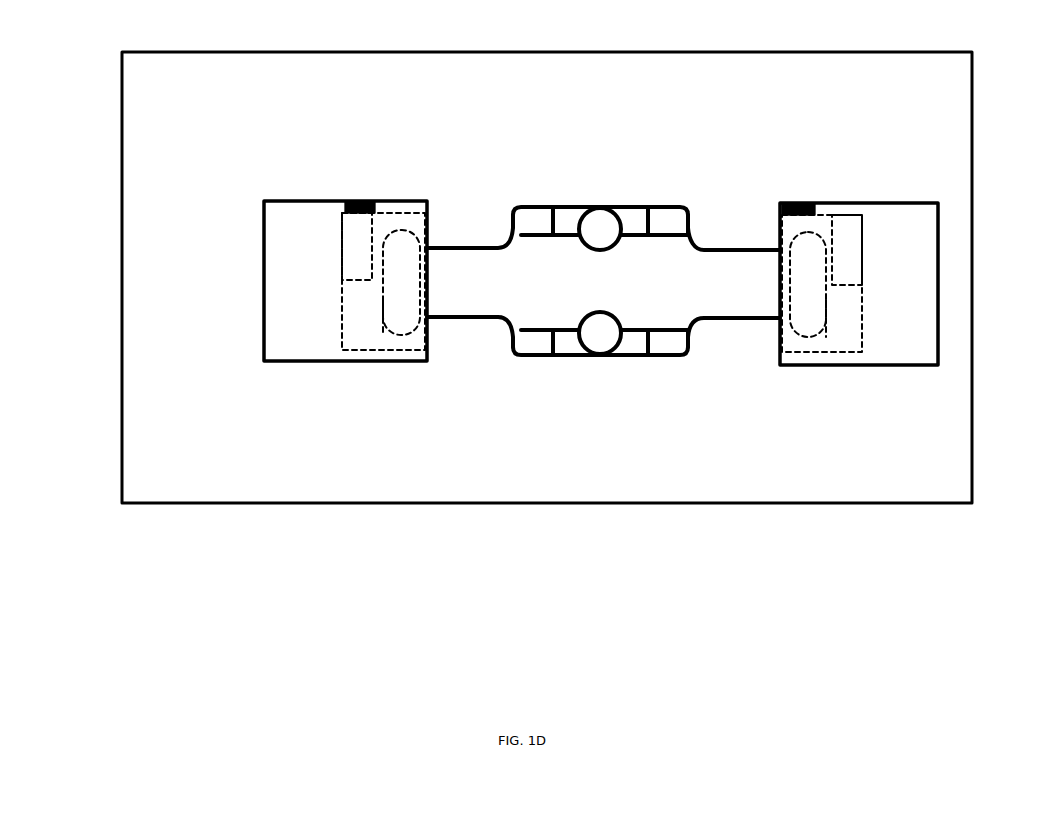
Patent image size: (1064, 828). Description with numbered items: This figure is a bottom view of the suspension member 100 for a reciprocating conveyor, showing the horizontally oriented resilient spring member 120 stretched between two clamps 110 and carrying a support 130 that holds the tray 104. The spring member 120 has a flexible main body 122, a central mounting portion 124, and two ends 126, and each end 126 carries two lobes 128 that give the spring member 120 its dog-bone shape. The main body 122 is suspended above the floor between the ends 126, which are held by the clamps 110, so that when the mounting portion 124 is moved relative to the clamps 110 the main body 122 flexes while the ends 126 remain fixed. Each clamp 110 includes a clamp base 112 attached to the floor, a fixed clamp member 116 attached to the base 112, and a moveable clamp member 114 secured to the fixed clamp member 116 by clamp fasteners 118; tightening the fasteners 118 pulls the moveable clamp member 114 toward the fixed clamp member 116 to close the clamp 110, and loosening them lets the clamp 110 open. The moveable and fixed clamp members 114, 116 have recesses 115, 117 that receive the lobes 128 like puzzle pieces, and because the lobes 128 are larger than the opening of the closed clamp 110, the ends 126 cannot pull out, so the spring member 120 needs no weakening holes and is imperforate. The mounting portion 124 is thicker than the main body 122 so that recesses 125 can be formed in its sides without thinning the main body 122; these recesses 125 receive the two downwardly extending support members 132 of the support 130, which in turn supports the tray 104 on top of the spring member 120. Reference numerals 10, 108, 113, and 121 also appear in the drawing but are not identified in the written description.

The device 10 is at (1000, 91).
The suspension member 100 is at (746, 152).
The tray 104 is at (622, 99).
The second region 108 is at (615, 297).
The clamp 110 is at (250, 273).
The clamp base 112 is at (297, 220).
The pad lower portion 113 is at (338, 325).
The moveable clamp member 114 is at (403, 196).
The recess 115 is at (338, 268).
The fixed clamp member 116 is at (372, 365).
The recess 117 is at (860, 312).
The clamp fastener 118 is at (360, 196).
The horizontally oriented resilient spring member 120 is at (538, 222).
The lower inlet chamber 121 is at (580, 324).
The flexible main body 122 is at (730, 320).
The mounting portion 124 is at (778, 228).
The recess 125 is at (619, 247).
The end 126 is at (470, 286).
The lobe 128 is at (432, 226).
The support 130 is at (662, 215).
The support member 132 is at (601, 222).